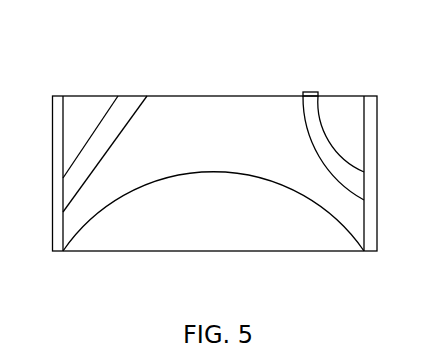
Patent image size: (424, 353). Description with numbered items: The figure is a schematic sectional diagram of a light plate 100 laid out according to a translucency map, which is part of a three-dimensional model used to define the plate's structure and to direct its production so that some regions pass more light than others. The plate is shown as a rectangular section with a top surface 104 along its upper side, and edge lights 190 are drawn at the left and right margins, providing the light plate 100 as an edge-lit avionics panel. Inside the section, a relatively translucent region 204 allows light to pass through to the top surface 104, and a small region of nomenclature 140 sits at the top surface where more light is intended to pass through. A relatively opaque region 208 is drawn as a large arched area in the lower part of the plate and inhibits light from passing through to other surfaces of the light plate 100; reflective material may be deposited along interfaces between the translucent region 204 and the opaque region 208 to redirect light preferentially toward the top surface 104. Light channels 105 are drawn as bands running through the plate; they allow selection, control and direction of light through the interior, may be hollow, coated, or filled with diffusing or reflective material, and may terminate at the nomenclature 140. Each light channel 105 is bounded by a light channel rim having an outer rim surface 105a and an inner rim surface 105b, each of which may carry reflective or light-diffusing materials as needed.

The light plate 100 is at (206, 160).
The top surface 104 is at (207, 97).
The edge lights 190 is at (57, 113).
The light channels 105 is at (206, 194).
The outer rim surface 105a is at (70, 197).
The inner rim surface 105b is at (80, 153).
The relatively translucent region 204 is at (285, 105).
The nomenclature 140 is at (312, 92).
The relatively opaque region 208 is at (325, 240).